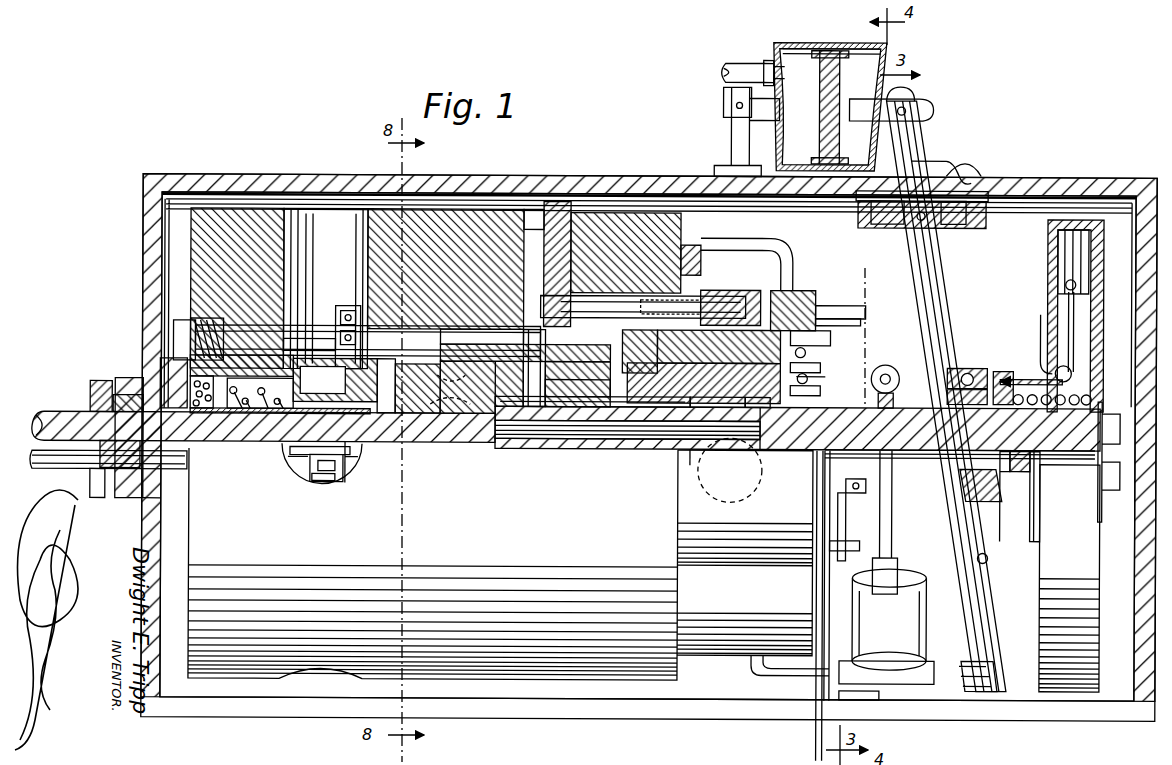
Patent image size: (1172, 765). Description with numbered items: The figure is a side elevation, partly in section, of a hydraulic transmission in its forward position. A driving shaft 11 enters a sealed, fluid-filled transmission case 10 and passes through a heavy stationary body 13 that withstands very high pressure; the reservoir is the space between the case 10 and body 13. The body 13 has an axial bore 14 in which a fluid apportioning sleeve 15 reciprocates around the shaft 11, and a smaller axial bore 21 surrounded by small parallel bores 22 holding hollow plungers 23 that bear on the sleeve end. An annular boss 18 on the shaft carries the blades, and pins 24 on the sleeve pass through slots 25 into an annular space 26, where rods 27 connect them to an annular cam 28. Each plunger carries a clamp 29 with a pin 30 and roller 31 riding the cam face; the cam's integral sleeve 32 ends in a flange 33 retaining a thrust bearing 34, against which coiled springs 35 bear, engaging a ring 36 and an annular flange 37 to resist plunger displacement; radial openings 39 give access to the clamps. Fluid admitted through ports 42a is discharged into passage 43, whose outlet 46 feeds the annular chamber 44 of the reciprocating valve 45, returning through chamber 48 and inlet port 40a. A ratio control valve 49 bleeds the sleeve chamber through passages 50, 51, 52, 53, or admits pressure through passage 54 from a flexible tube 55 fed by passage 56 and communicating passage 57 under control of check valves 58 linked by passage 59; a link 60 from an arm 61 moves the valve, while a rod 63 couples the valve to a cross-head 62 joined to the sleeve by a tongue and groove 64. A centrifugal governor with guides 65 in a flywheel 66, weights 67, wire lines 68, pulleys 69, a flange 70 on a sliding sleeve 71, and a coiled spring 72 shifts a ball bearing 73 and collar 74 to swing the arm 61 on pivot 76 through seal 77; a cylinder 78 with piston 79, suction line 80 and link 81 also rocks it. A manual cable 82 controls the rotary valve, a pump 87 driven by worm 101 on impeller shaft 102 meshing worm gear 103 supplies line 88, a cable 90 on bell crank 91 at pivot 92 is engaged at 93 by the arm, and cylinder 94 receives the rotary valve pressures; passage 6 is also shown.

The passage 6 is at (577, 394).
The transmission case 10 is at (215, 176).
The driving shaft 11 is at (52, 414).
The body 13 is at (500, 682).
The axial bore 14 is at (480, 210).
The fluid apportioning sleeve 15 is at (432, 210).
The annular boss 18 is at (490, 444).
The axial bore 21 is at (175, 345).
The small parallel bores 22 is at (290, 327).
The hollow plunger 23 is at (312, 340).
The pins 24 is at (515, 449).
The slots 25 is at (534, 449).
The annular space 26 is at (570, 449).
The rod 27 is at (410, 444).
The annular cam 28 is at (387, 446).
The clamp 29 is at (347, 307).
The pin 30 is at (188, 336).
The roller 31 is at (360, 446).
The integral sleeve 32 is at (213, 444).
The annular flange 33 is at (100, 383).
The thrust bearing 34 is at (128, 397).
The coiled springs 35 is at (236, 444).
The ring 36 is at (300, 446).
The annular flange 37 is at (335, 379).
The radial openings 39 is at (310, 210).
The inlet port 40a is at (730, 472).
The inlet/discharge port 42a is at (447, 450).
The discharge passage 43 is at (630, 449).
The annular chamber 44 is at (720, 449).
The reciprocating valve 45 is at (808, 350).
The outlet 46 is at (770, 449).
The reciprocating valve chamber 48 is at (692, 450).
The ratio control valve 49 is at (835, 305).
The passage 50 is at (639, 351).
The passage 51 is at (703, 367).
The passage 52 is at (735, 296).
The passage 53 is at (770, 256).
The passage 54 is at (673, 298).
The flexible tube 55 is at (812, 292).
The passage 56 is at (819, 333).
The communicating passage 57 is at (820, 364).
The check valves 58 is at (820, 390).
The communicating passage 59 is at (823, 375).
The link 60 is at (846, 318).
The arm 61 is at (930, 250).
The cross-head 62 is at (530, 202).
The rod 63 is at (610, 213).
The tongue and groove 64 is at (616, 300).
The guides 65 is at (1047, 262).
The flywheel 66 is at (1100, 658).
The weights 67 is at (1057, 270).
The wire lines 68 is at (1063, 380).
The pulleys 69 is at (1043, 348).
The flange 70 is at (1003, 530).
The sleeve 71 is at (1040, 512).
The coiled spring 72 is at (1040, 500).
The ball bearing 73 is at (985, 368).
The collar 74 is at (962, 548).
The pivot 76 is at (958, 162).
The seal 77 is at (935, 175).
The cylinder 78 is at (785, 42).
The piston 79 is at (818, 108).
The flexible line 80 is at (736, 63).
The link 81 is at (920, 100).
The cable 82 is at (817, 738).
The pump 87 is at (887, 626).
The pump discharge line 88 is at (848, 490).
The cable 90 is at (752, 668).
The bell crank 91 is at (842, 540).
The pivot 92 is at (824, 560).
The engagement point 93 is at (862, 700).
The cylinder 94 is at (745, 553).
The worm 101 is at (895, 355).
The impeller shaft 102 is at (892, 520).
The worm gear 103 is at (870, 456).